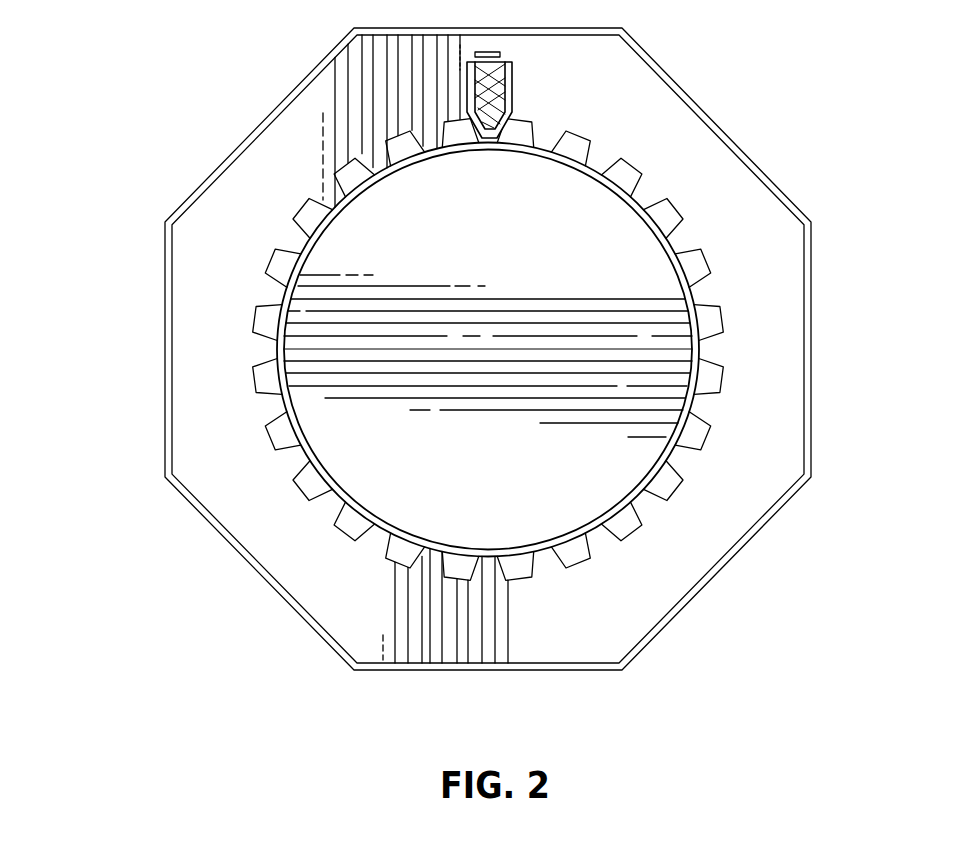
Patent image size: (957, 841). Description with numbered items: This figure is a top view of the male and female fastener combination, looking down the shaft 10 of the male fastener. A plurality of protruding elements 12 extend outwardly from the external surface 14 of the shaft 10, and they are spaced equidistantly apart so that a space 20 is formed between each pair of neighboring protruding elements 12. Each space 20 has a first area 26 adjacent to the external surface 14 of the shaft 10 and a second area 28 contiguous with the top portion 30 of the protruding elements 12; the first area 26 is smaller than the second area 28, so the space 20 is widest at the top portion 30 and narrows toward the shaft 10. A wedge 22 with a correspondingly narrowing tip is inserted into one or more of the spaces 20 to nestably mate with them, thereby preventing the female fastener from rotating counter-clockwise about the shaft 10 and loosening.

The shaft 10 is at (482, 350).
The protruding elements 12 is at (697, 263).
The external surface 14 is at (273, 352).
The space 20 is at (722, 350).
The wedge 22 is at (512, 97).
The first area 26 is at (673, 455).
The second area 28 is at (715, 412).
The top portion 30 is at (632, 537).